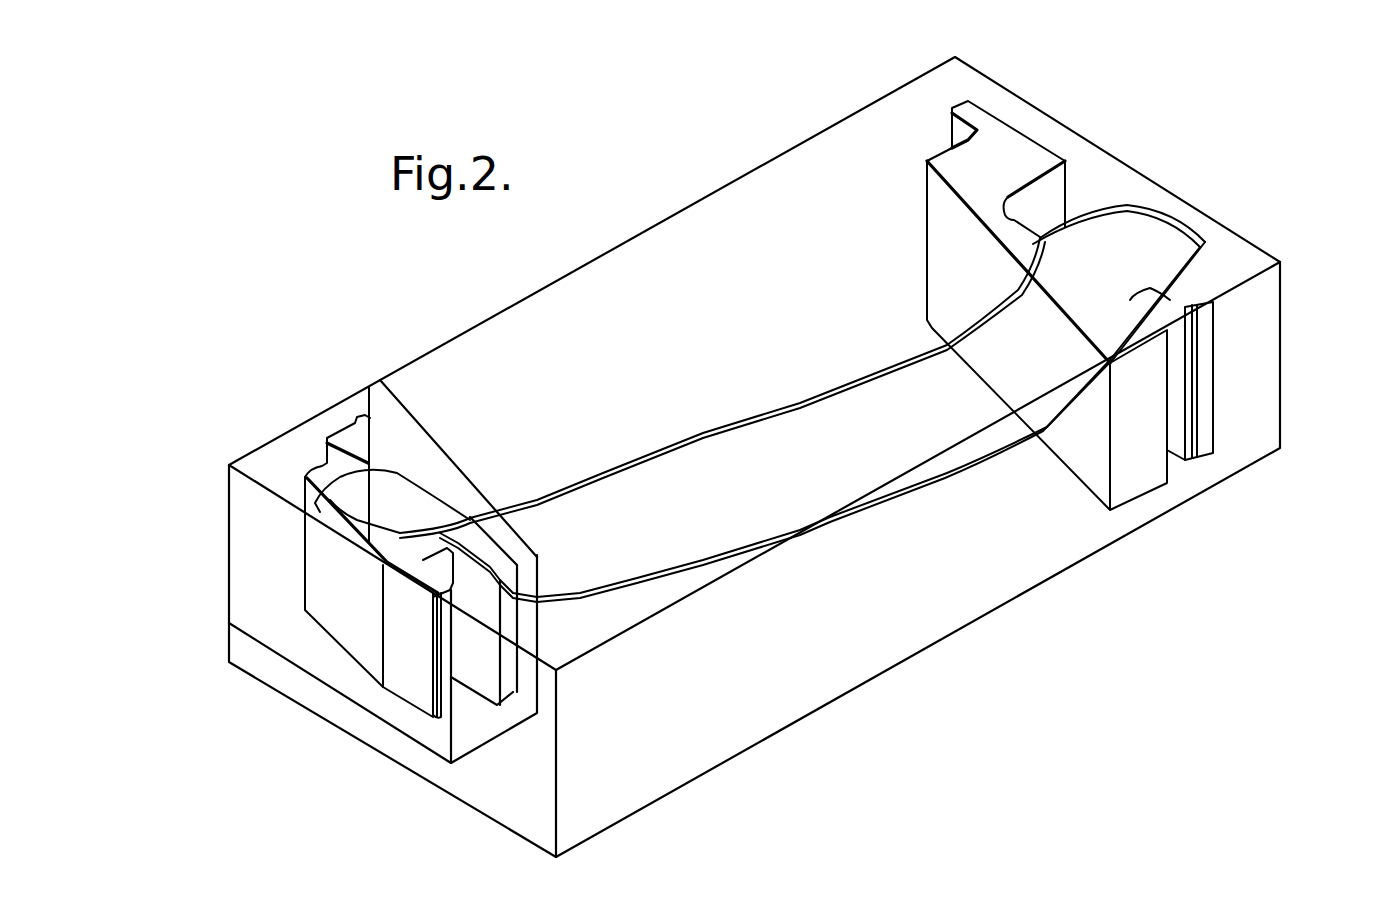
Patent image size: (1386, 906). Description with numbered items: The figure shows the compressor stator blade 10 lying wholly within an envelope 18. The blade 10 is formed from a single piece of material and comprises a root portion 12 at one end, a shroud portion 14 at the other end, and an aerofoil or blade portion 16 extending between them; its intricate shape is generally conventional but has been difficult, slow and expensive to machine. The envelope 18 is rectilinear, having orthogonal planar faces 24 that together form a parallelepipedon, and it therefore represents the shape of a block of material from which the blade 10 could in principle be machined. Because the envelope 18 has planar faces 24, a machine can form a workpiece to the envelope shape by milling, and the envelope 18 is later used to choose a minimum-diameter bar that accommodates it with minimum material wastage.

The compressor stator blade 10 is at (697, 432).
The root portion 12 is at (1023, 153).
The shroud portion 14 is at (353, 433).
The blade portion 16 is at (790, 468).
The envelope 18 is at (672, 218).
The planar faces 24 is at (867, 147).